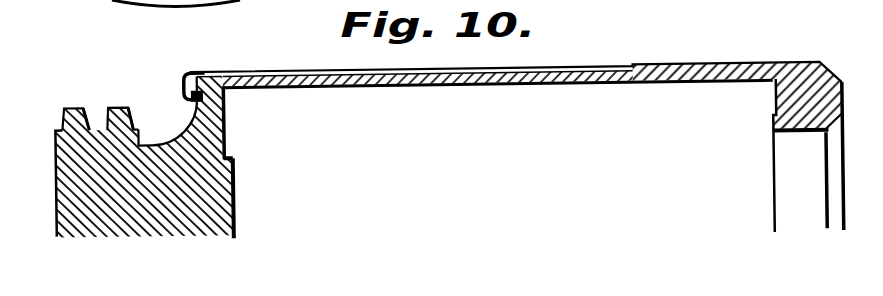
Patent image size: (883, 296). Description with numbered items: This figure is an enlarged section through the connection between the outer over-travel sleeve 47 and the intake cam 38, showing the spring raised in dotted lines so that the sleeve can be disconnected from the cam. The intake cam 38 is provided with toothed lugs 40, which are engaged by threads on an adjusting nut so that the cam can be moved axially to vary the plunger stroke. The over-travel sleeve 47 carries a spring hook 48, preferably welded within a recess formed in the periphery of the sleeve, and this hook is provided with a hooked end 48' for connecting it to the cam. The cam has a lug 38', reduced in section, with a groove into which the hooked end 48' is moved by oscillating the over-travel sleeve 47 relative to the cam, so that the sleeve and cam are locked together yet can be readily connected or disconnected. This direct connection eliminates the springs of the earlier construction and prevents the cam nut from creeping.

The intake cam 38 is at (176, 157).
The lug 38' is at (250, 116).
The toothed lugs 40 is at (75, 104).
The outer over-travel sleeve 47 is at (650, 87).
The spring hook 48 is at (199, 55).
The hooked end 48' is at (155, 71).